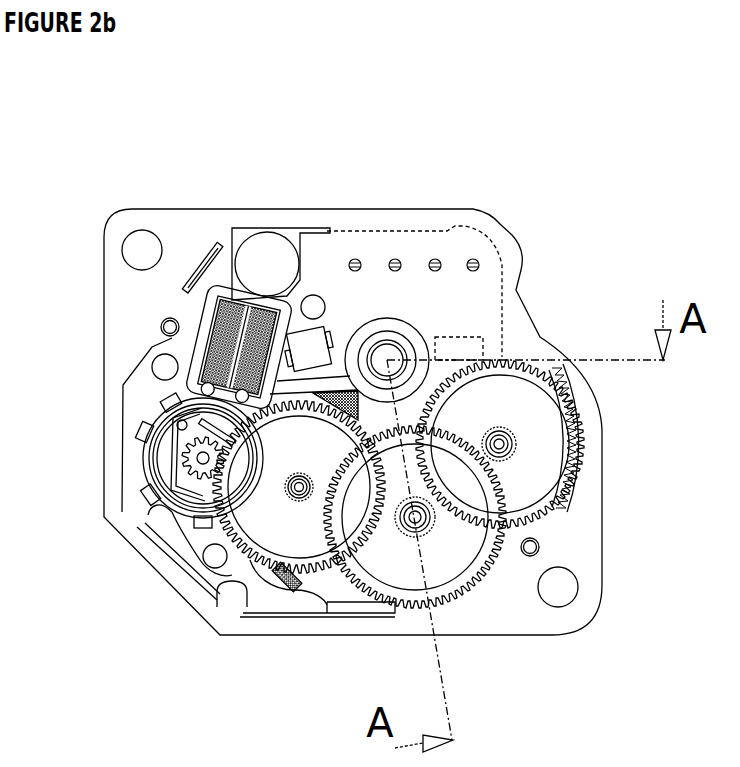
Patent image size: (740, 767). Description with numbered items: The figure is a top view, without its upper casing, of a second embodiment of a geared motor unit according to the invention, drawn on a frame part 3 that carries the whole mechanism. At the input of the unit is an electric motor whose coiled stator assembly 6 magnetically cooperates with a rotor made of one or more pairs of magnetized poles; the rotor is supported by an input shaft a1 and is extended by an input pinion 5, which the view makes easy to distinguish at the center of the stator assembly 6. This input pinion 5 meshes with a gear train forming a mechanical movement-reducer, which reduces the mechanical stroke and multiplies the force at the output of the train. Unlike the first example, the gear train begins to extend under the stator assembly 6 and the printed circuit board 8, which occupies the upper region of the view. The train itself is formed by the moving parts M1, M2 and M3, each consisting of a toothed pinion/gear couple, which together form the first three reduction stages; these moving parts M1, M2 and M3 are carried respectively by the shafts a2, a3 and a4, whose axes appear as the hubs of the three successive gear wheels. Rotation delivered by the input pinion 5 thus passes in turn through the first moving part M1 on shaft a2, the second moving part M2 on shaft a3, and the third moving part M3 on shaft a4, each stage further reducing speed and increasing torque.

The frame plate 3 is at (207, 222).
The printed circuit board 8 is at (321, 263).
The coiled stator assembly 6 is at (155, 408).
The input pinion 5 is at (187, 457).
The input shaft a1 is at (202, 478).
The moving part (first reduction stage) M1 is at (272, 538).
The shaft a2 is at (299, 490).
The moving part (second reduction stage) M2 is at (395, 562).
The shaft a3 is at (420, 520).
The moving part (third reduction stage) M3 is at (533, 457).
The shaft a4 is at (507, 442).